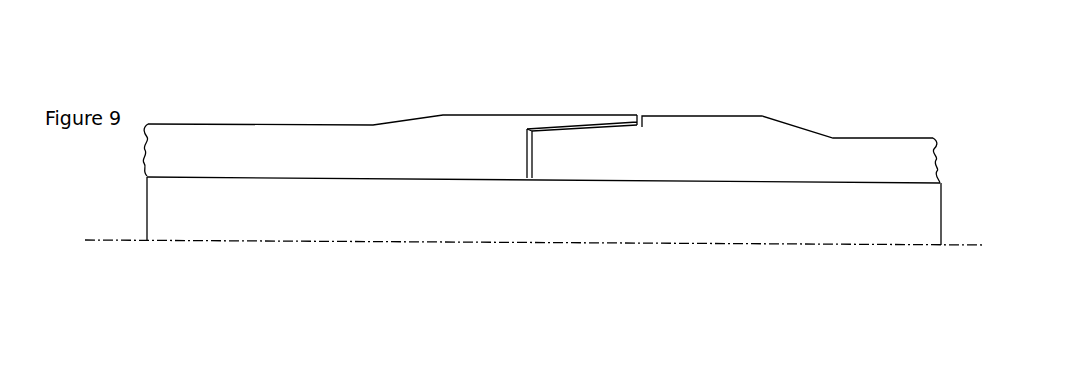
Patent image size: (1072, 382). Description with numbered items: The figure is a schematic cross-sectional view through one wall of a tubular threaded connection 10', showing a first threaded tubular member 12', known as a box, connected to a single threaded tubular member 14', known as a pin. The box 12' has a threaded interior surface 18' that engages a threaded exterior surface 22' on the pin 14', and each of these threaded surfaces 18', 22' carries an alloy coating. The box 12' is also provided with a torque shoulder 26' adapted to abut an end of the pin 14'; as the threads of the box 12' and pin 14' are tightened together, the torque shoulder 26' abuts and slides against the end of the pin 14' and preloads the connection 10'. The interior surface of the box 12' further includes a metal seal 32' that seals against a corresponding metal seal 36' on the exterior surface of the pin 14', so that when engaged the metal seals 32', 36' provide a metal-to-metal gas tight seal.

The tubular threaded connection 10' is at (619, 59).
The first threaded tubular member 12' is at (373, 111).
The single threaded tubular member 14' is at (847, 110).
The threaded interior surface 18' is at (578, 93).
The threaded exterior surface 22' is at (586, 170).
The torque shoulder 26' is at (486, 154).
The metal seal 32' is at (478, 121).
The metal seal 36' is at (557, 201).